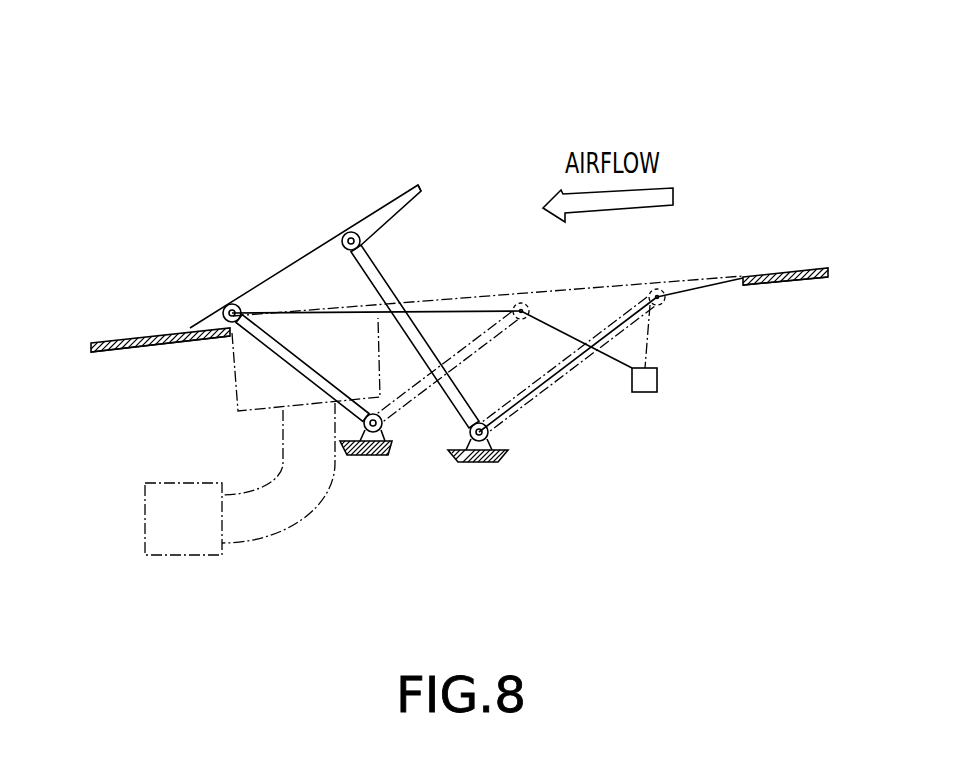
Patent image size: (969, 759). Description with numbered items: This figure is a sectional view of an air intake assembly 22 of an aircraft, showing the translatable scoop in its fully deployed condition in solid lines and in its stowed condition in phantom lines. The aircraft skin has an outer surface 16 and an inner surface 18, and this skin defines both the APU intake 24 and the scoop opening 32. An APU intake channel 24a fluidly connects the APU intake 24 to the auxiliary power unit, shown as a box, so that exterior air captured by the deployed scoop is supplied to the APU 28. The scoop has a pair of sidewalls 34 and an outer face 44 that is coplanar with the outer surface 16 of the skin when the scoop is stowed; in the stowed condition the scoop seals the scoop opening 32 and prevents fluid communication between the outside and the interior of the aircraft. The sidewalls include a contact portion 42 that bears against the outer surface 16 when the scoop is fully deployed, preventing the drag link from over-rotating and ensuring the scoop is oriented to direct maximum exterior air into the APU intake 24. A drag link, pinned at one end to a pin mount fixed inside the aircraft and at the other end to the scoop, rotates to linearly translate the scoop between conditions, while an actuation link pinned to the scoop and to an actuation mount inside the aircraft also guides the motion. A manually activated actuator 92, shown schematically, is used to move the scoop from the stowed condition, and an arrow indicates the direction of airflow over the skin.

The outer surface 16 is at (113, 340).
The inner surface 18 is at (102, 353).
The air intake assembly 22 is at (492, 127).
The auxiliary power unit (APU) intake 24 is at (300, 340).
The auxiliary power unit (APU) intake channel 24a is at (268, 513).
The auxiliary power unit (APU) 28 is at (145, 520).
The scoop opening 32 is at (744, 271).
The link (stowed) 34 is at (645, 340).
The contact portion 42 is at (190, 328).
The outer face 44 is at (388, 207).
The manually activated actuator 92 is at (648, 383).